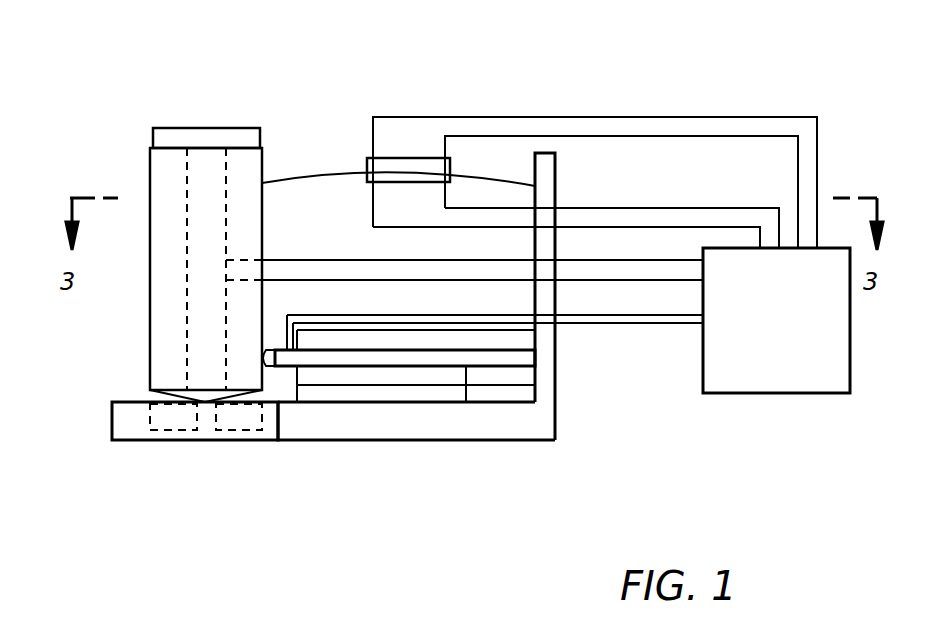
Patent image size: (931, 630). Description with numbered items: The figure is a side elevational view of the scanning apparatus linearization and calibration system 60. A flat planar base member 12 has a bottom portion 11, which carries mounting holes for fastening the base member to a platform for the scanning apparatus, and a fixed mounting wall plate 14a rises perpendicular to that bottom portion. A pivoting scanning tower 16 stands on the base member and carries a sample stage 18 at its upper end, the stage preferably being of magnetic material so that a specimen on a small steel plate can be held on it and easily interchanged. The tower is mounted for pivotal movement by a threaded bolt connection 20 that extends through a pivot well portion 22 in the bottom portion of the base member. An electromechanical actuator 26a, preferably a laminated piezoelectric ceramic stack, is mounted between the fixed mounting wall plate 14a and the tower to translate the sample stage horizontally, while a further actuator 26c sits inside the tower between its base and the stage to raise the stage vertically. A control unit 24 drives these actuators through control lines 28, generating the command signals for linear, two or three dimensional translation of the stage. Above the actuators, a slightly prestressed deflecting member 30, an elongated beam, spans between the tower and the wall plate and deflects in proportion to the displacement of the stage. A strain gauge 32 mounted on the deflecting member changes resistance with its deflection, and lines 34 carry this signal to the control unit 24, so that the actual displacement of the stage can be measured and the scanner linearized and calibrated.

The fluid dispensing system 60 is at (130, 92).
The sample stage 18 is at (214, 128).
The pivoting scanning tower 16 is at (150, 252).
The electromechanical actuator 26c is at (203, 242).
The control lines 28 is at (602, 280).
The deflecting member 30 is at (335, 170).
The strain gauge 32 is at (407, 158).
The lines 34 is at (648, 136).
The control unit 24 is at (703, 350).
The fixed mounting wall plate 14a is at (547, 355).
The bottom portion 11 is at (405, 443).
The base member 12 is at (100, 420).
The threaded bolt connection 20 is at (207, 420).
The pivot well portion 22 is at (238, 420).
The electromechanical actuator 26a is at (468, 402).